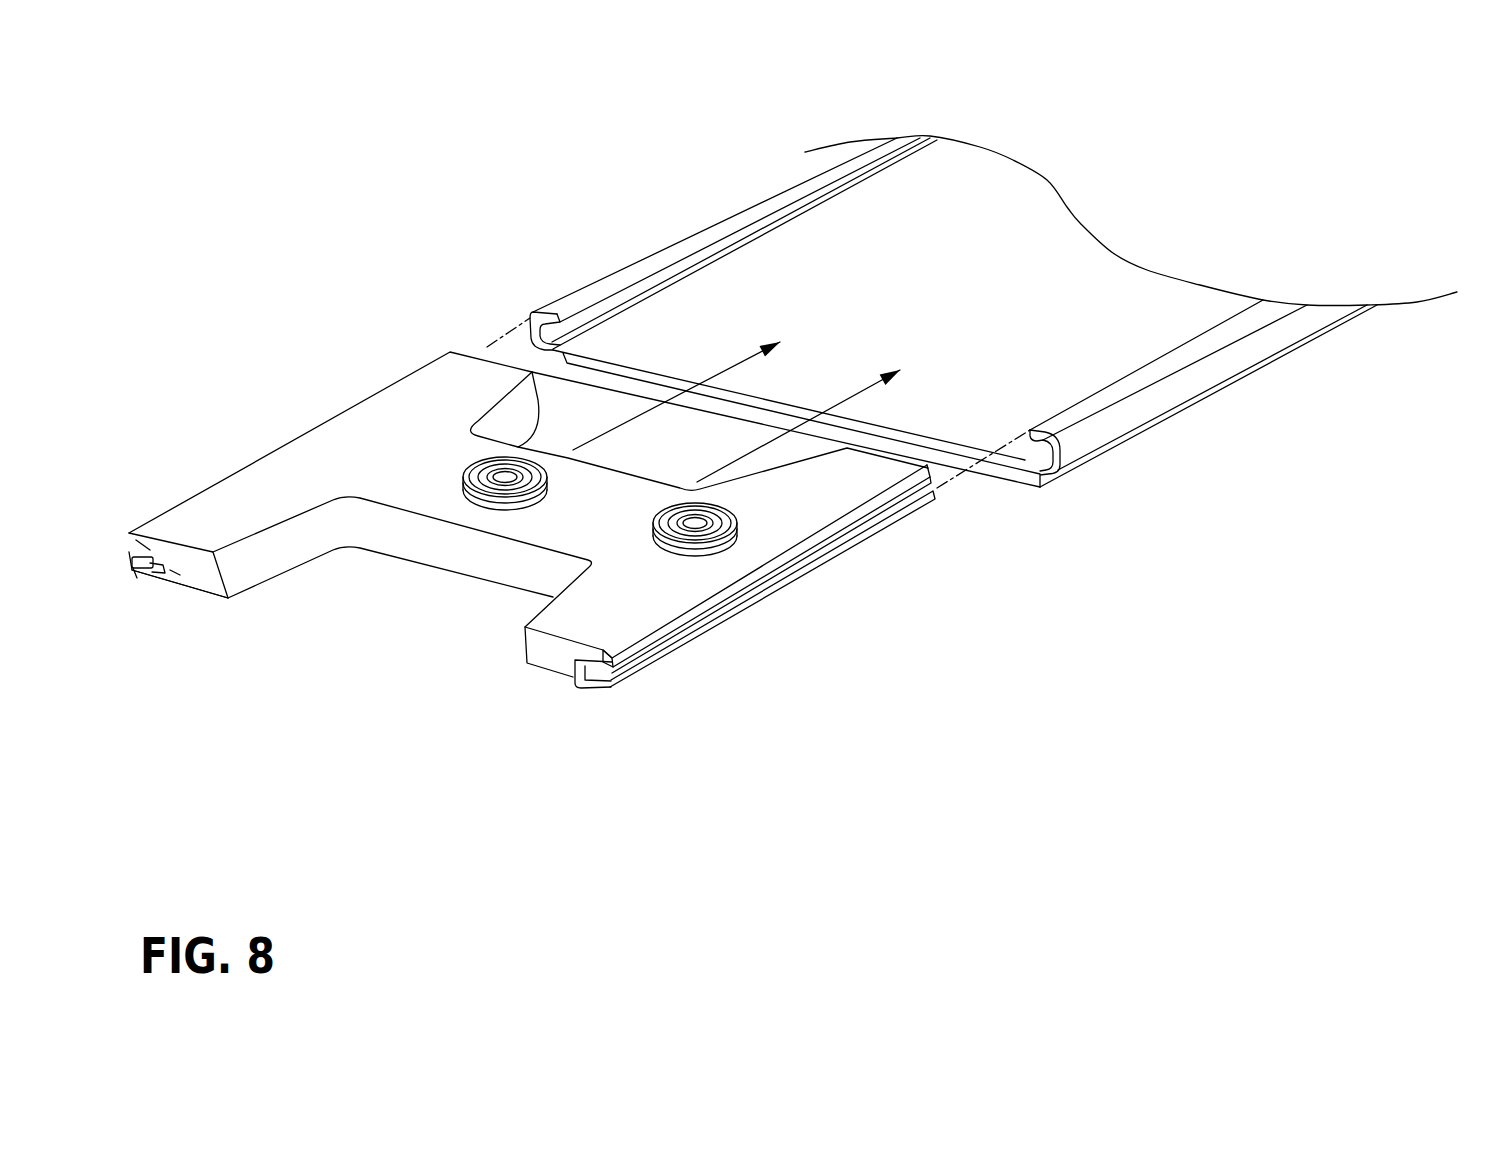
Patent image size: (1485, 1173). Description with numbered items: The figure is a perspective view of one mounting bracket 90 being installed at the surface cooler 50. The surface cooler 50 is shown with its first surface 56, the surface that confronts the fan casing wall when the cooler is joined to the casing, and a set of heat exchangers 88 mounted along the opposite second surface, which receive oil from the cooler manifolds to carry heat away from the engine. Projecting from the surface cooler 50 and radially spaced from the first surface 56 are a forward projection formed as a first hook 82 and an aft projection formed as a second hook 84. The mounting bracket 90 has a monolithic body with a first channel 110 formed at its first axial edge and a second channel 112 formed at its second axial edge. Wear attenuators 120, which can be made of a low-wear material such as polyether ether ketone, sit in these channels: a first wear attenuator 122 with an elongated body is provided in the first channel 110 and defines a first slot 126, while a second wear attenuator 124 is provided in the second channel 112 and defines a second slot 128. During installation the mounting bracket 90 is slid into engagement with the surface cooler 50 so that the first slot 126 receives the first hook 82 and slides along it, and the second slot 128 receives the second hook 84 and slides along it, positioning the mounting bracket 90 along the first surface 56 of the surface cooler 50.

The surface cooler 50 is at (1217, 180).
The first surface 56 is at (1008, 222).
The first hook 82 is at (1155, 359).
The second hook 84 is at (663, 263).
The heat exchangers 88 is at (755, 412).
The mounting bracket 90 is at (400, 358).
The first channel 110 is at (598, 655).
The second channel 112 is at (144, 548).
The wear attenuators 120 is at (190, 588).
The first wear attenuator 122 is at (580, 666).
The second wear attenuator 124 is at (134, 578).
The first slot 126 is at (827, 553).
The second slot 128 is at (122, 552).